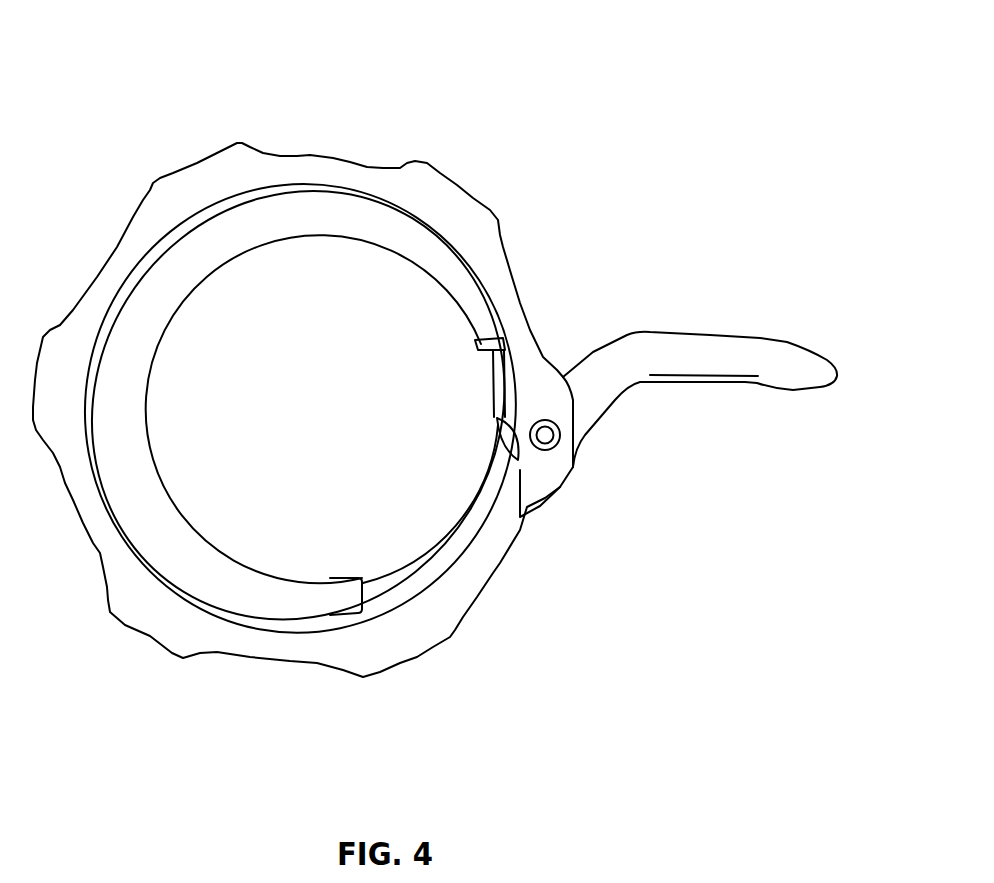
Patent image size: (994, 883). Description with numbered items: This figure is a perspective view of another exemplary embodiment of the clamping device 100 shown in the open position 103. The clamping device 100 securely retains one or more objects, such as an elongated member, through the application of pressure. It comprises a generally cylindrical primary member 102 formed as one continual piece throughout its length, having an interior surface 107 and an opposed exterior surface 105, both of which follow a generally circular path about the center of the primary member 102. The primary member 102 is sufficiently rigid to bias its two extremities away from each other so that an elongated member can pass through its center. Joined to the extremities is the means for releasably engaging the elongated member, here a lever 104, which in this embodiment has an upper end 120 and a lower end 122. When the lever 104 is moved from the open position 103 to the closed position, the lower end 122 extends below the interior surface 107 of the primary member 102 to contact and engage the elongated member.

The clamping device 100 is at (343, 97).
The primary member 102 is at (177, 195).
The open position 103 is at (774, 330).
The lever 104 is at (655, 328).
The exterior surface 105 is at (495, 565).
The interior surface 107 is at (433, 575).
The upper end 120 is at (493, 420).
The lower end 122 is at (570, 463).